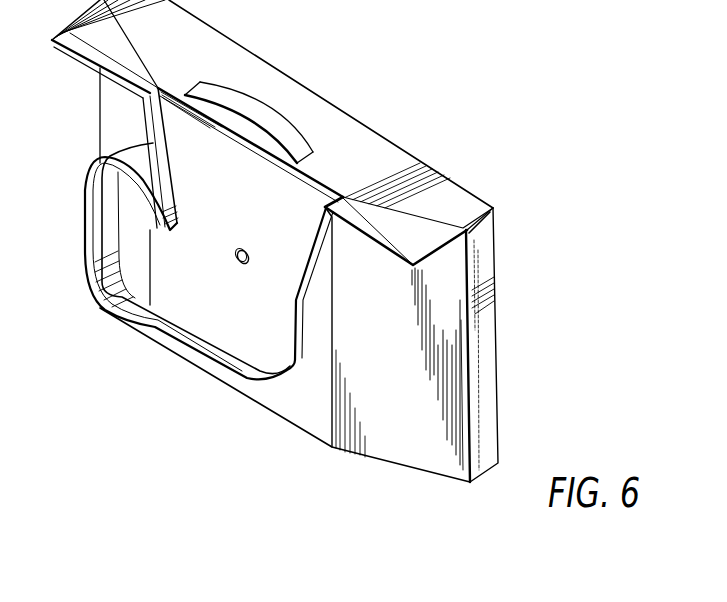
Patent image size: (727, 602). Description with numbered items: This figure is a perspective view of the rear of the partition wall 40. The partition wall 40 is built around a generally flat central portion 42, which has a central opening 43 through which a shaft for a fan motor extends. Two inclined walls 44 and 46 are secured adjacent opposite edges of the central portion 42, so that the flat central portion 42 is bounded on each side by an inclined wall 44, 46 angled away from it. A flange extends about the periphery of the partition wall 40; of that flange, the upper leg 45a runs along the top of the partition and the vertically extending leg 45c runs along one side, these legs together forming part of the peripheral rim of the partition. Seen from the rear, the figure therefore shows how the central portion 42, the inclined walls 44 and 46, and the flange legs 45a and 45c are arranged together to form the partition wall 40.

The partition wall 40 is at (438, 190).
The central portion 42 is at (313, 403).
The central opening 43 is at (242, 252).
The inclined wall 44 is at (123, 133).
The upper leg 45a is at (358, 155).
The vertically extending leg 45c is at (478, 392).
The inclined wall 46 is at (452, 270).